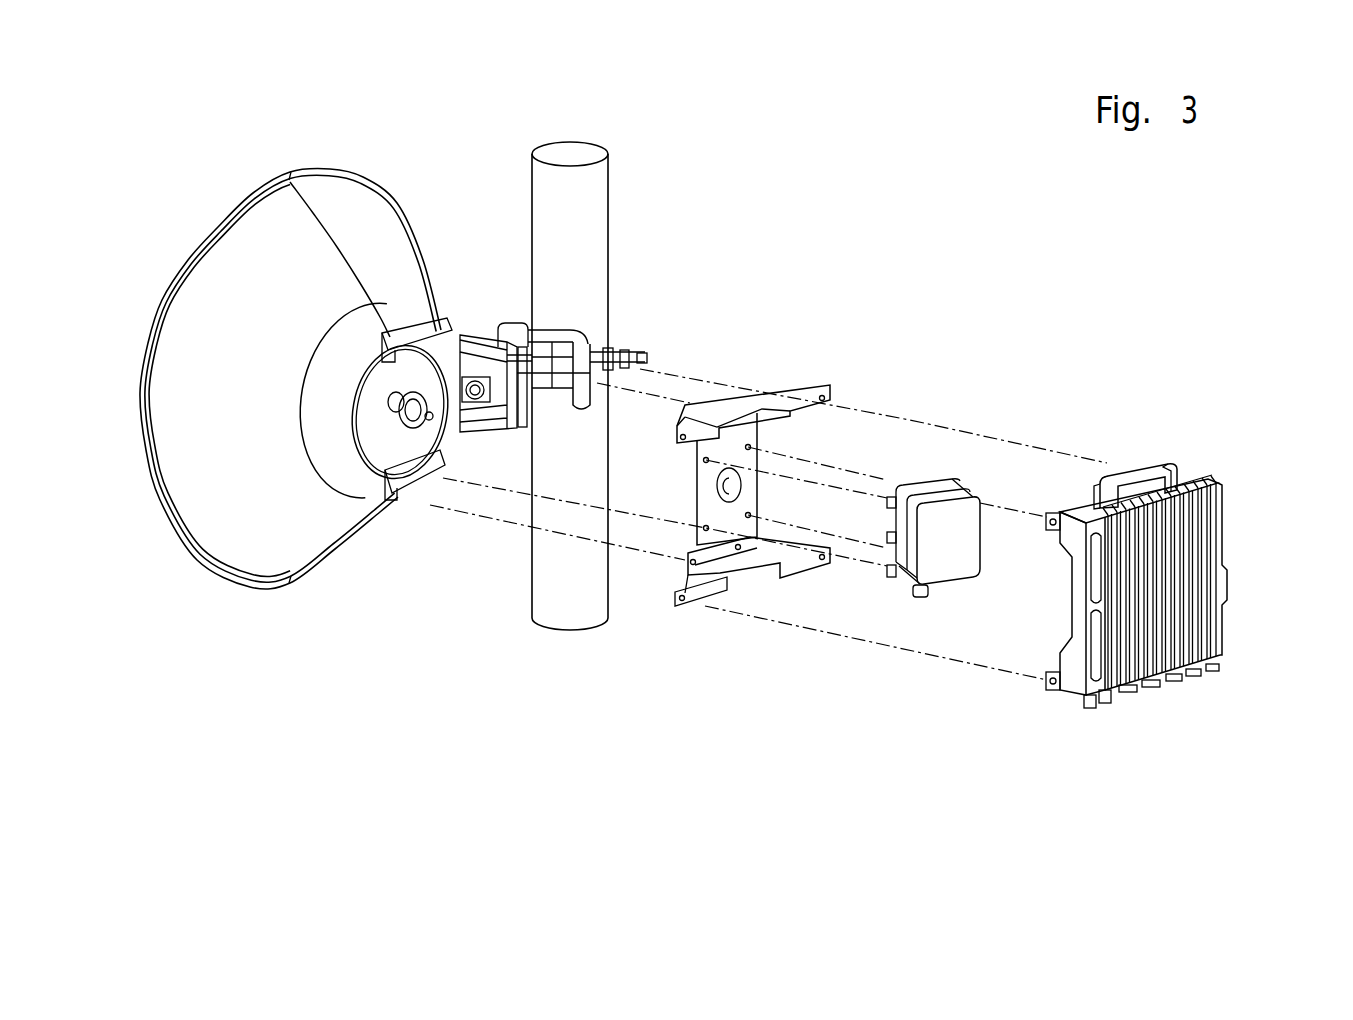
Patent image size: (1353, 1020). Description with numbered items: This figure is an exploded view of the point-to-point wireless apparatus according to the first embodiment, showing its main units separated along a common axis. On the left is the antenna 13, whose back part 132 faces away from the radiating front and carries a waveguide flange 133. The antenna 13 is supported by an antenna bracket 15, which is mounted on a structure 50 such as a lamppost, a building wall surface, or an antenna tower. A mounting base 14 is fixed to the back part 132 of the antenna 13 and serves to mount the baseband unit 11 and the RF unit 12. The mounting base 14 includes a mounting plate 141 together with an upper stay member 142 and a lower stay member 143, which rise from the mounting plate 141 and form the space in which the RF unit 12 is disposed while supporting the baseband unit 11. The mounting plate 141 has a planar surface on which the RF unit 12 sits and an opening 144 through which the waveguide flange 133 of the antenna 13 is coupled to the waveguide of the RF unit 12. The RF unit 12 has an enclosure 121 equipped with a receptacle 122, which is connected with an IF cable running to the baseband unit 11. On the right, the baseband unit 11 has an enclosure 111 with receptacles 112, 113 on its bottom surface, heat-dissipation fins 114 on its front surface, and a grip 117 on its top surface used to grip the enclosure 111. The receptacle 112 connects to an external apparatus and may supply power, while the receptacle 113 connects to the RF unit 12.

The baseband unit 11 is at (1149, 582).
The enclosure 111 is at (1077, 677).
The receptacle 112 is at (1153, 685).
The receptacle 113 is at (1093, 708).
The heat-dissipation fins 114 is at (1227, 530).
The grip 117 is at (1153, 465).
The RF unit 12 is at (967, 517).
The enclosure 121 is at (967, 565).
The receptacle 122 is at (923, 602).
The antenna 13 is at (315, 150).
The back part 132 is at (413, 273).
The waveguide flange 133 is at (406, 424).
The mounting base 14 is at (772, 479).
The mounting plate 141 is at (758, 493).
The upper stay member 142 is at (795, 387).
The lower stay member 143 is at (685, 573).
The opening 144 is at (728, 478).
The antenna bracket 15 is at (567, 337).
The structure 50 is at (608, 203).